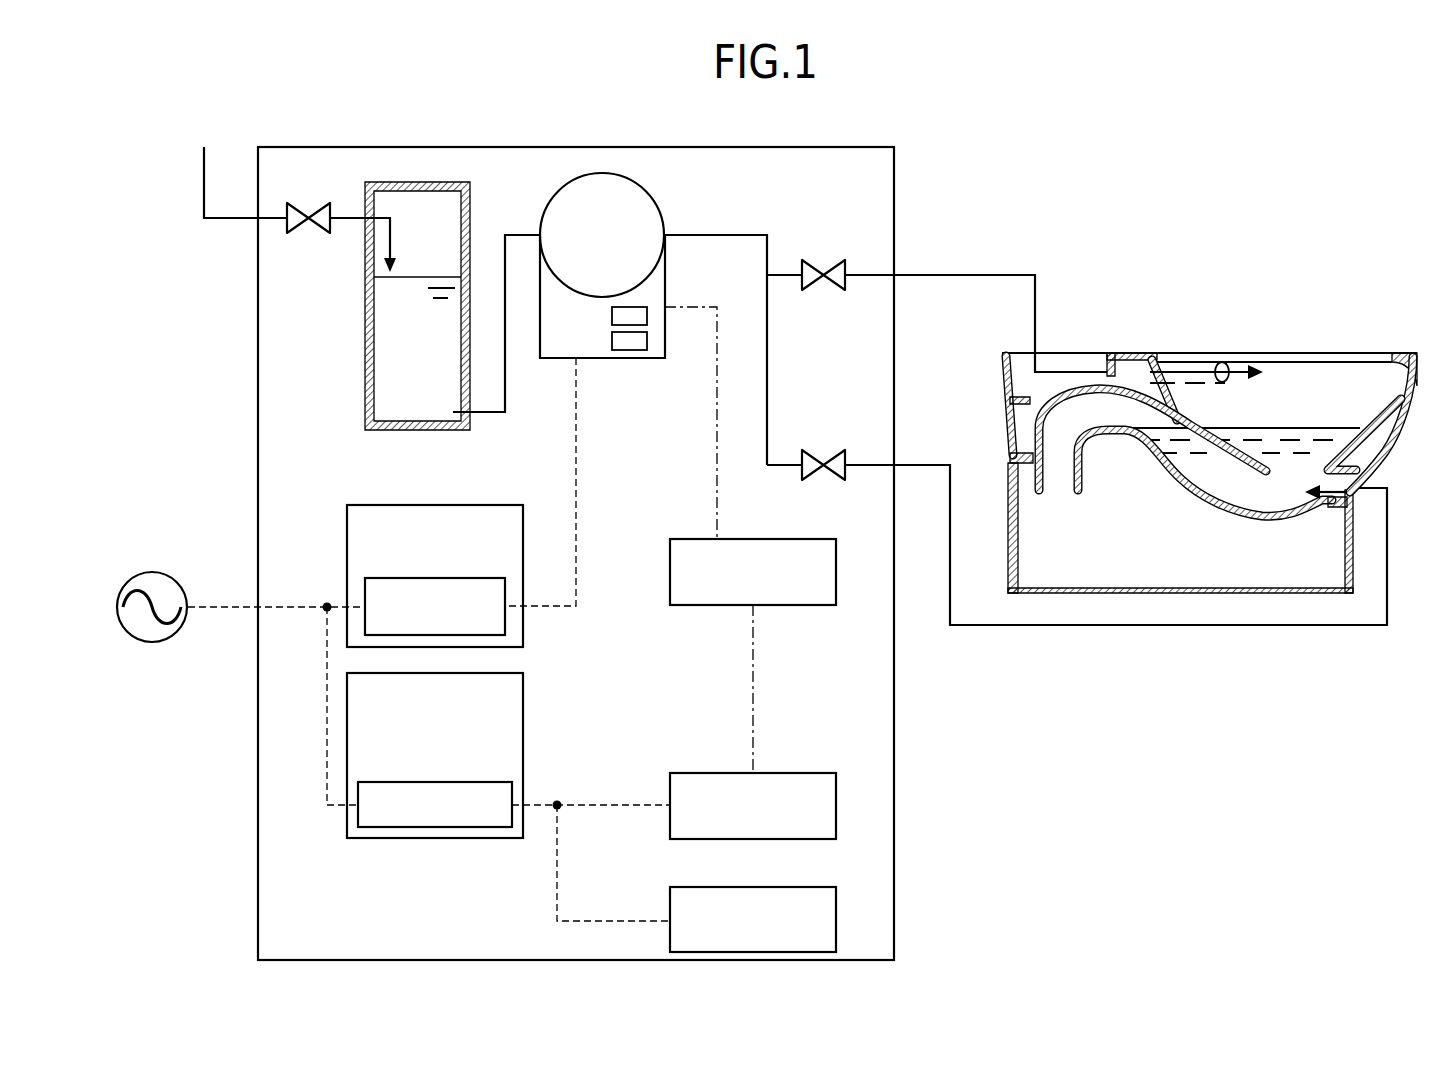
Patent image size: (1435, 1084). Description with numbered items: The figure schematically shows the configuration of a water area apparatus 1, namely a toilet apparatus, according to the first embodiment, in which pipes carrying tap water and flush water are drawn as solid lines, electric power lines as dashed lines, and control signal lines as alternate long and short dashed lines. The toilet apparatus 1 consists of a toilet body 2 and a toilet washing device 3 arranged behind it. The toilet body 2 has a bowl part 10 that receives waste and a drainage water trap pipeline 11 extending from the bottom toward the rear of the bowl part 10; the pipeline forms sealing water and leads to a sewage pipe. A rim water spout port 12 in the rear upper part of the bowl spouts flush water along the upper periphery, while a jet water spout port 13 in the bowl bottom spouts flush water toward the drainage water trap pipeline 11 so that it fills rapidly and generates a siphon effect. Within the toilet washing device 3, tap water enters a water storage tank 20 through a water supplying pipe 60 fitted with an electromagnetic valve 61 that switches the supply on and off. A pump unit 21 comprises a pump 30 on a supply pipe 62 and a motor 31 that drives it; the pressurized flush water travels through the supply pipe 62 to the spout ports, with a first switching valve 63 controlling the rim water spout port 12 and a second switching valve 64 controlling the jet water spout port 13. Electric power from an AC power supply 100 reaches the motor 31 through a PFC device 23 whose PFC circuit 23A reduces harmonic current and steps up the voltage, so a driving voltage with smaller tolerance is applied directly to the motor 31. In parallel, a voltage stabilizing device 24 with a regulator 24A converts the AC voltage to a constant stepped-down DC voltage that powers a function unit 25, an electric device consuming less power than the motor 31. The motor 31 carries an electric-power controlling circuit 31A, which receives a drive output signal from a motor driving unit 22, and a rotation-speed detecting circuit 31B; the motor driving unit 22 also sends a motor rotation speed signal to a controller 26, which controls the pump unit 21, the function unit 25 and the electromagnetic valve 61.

The water area apparatus 1 is at (1008, 110).
The toilet body 2 is at (1209, 442).
The toilet washing device 3 is at (834, 147).
The bowl part 10 is at (1387, 408).
The drainage water trap pipeline 11 is at (1180, 463).
The rim water spout port 12 is at (1208, 365).
The jet water spout port 13 is at (1330, 498).
The water storage tank 20 is at (442, 182).
The pump unit 21 is at (636, 265).
The motor driving unit 22 is at (790, 539).
The PFC device 23 is at (465, 505).
The PFC circuit 23A is at (457, 578).
The voltage stabilizing device 24 is at (523, 734).
The regulator 24A is at (457, 782).
The function unit 25 is at (790, 887).
The controller 26 is at (790, 773).
The pump 30 is at (626, 173).
The motor 31 is at (605, 358).
The electric-power controlling circuit 31A is at (633, 307).
The rotation-speed detecting circuit 31B is at (633, 350).
The water supplying pipe 60 is at (237, 218).
The electromagnetic valve 61 is at (312, 203).
The supply pipe 62 is at (737, 235).
The first switching valve 63 is at (817, 260).
The second switching valve 64 is at (817, 450).
The AC power supply 100 is at (177, 574).